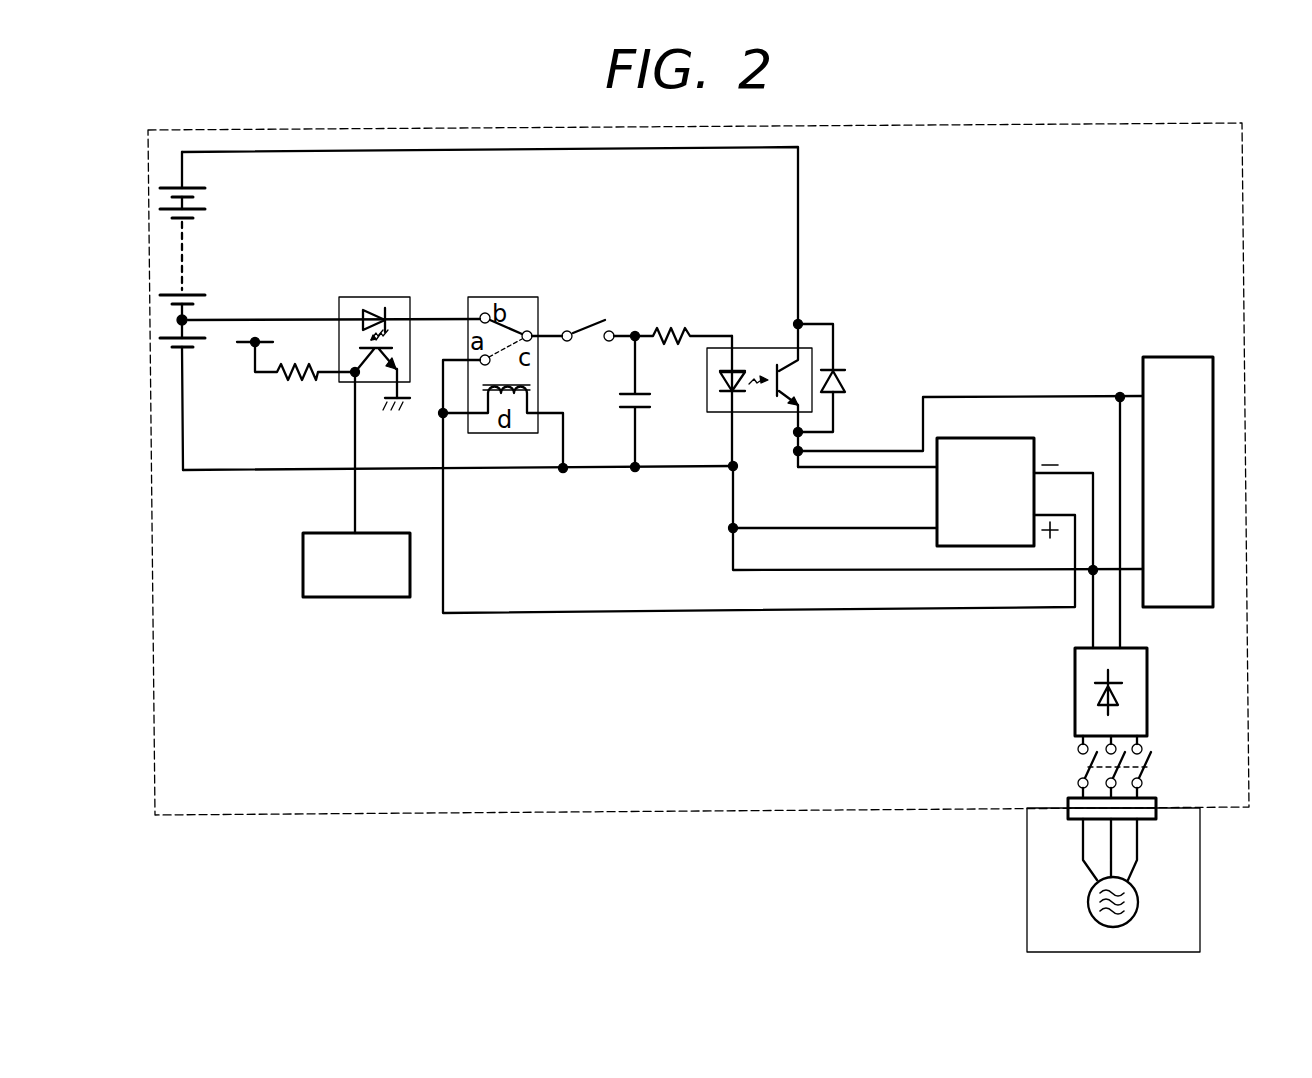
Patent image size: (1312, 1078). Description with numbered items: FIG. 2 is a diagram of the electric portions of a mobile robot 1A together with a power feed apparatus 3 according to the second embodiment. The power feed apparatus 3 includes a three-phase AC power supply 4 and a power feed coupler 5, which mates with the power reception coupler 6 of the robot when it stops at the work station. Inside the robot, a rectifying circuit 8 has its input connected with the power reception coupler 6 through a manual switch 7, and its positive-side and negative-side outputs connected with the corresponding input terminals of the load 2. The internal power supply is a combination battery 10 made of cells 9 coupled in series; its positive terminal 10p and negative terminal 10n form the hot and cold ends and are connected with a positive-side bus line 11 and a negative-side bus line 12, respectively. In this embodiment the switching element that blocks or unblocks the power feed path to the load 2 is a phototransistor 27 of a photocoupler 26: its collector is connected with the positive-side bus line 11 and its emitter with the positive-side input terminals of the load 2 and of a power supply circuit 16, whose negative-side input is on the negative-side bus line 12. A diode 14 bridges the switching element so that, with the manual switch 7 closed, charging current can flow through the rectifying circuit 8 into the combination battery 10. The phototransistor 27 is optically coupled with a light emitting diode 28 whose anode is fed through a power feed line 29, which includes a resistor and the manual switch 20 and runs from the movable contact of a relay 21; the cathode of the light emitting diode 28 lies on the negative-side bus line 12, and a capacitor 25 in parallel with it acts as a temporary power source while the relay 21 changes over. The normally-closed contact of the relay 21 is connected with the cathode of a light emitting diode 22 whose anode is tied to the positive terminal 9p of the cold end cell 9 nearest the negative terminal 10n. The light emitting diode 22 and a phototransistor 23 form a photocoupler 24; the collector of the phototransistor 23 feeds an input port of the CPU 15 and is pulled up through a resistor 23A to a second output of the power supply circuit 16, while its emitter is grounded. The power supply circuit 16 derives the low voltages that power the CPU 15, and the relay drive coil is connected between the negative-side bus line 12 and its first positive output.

The mobile robot 1A is at (1249, 127).
The load 2 is at (1192, 357).
The power feed apparatus 3 is at (1200, 842).
The three-phase AC power supply 4 is at (1140, 898).
The power feed coupler 5 is at (1068, 819).
The power reception coupler 6 is at (1068, 802).
The manual switch 7 is at (1150, 757).
The rectifying circuit 8 is at (1147, 688).
The cell 9 is at (201, 346).
The positive terminal of cold end cell 9p is at (187, 318).
The combination battery 10 is at (213, 217).
The positive terminal 10p is at (188, 189).
The negative terminal 10n is at (196, 352).
The positive-side bus line 11 is at (801, 207).
The negative-side bus line 12 is at (667, 470).
The diode 14 is at (848, 380).
The CPU 15 is at (397, 533).
The power supply circuit 16 is at (1010, 438).
The manual switch 20 is at (590, 318).
The relay 21 is at (522, 297).
The light emitting diode 22 is at (377, 306).
The phototransistor 23 is at (360, 360).
The resistor 23A is at (300, 380).
The photocoupler 24 is at (410, 300).
The capacitor 25 is at (620, 398).
The photocoupler 26 is at (760, 348).
The phototransistor 27 is at (793, 411).
The light emitting diode 28 is at (720, 381).
The power feed line 29 is at (712, 335).